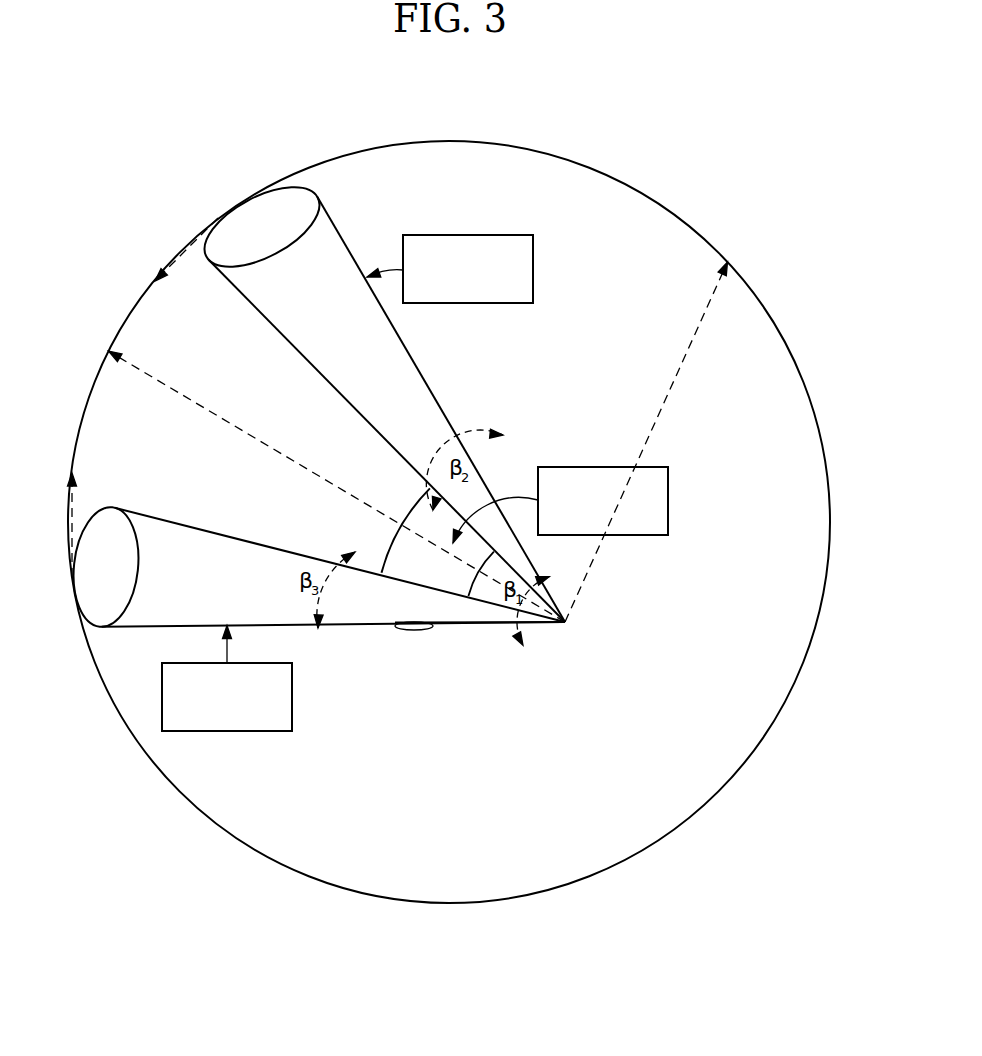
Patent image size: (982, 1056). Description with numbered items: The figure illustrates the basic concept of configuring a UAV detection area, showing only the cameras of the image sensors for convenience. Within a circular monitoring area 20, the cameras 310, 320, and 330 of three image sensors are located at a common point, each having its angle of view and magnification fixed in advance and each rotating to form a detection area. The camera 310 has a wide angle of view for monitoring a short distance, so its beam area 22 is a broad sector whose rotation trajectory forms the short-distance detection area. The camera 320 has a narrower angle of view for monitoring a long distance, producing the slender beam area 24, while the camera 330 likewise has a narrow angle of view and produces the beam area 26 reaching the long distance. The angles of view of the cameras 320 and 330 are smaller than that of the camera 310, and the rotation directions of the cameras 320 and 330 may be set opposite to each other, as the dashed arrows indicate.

The monitoring area 20 is at (655, 200).
The beam area 22 is at (409, 578).
The beam area 24 is at (249, 238).
The beam area 26 is at (113, 583).
The camera 310 is at (668, 500).
The camera 320 is at (533, 268).
The camera 330 is at (292, 697).